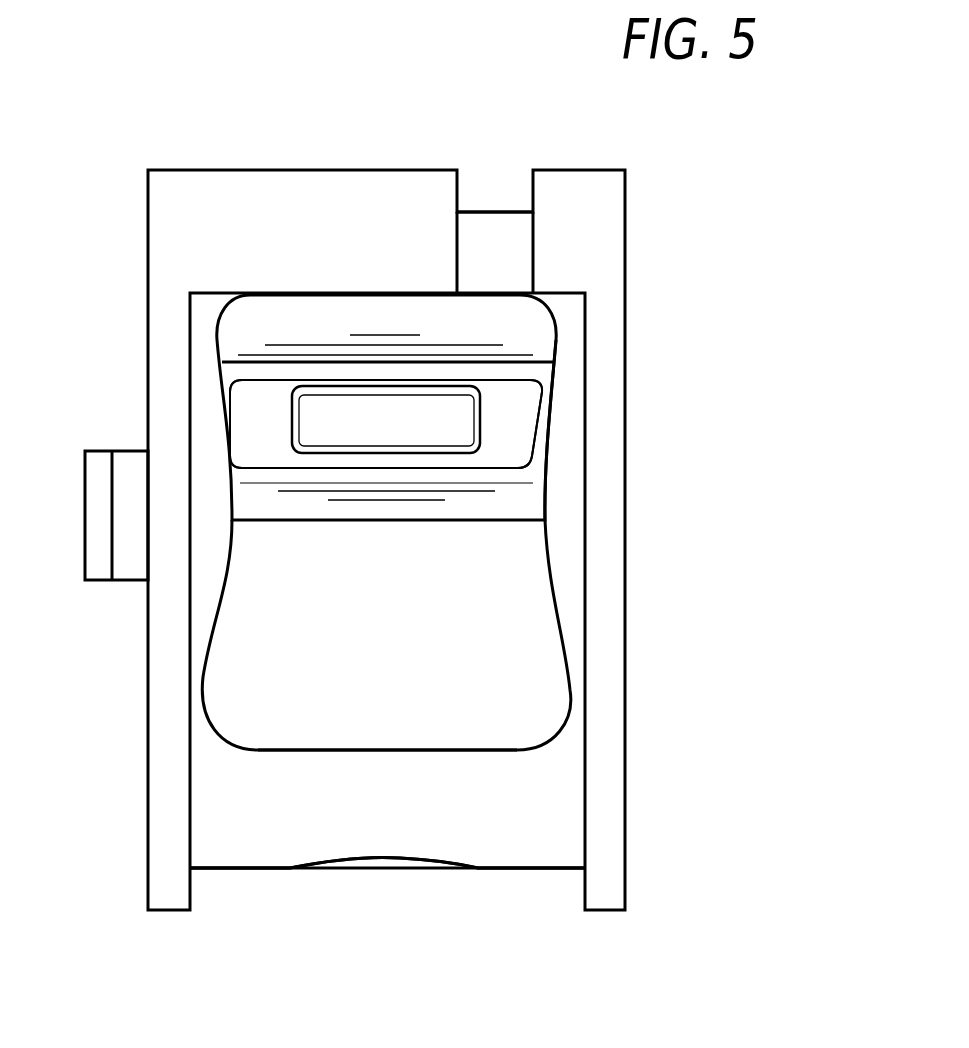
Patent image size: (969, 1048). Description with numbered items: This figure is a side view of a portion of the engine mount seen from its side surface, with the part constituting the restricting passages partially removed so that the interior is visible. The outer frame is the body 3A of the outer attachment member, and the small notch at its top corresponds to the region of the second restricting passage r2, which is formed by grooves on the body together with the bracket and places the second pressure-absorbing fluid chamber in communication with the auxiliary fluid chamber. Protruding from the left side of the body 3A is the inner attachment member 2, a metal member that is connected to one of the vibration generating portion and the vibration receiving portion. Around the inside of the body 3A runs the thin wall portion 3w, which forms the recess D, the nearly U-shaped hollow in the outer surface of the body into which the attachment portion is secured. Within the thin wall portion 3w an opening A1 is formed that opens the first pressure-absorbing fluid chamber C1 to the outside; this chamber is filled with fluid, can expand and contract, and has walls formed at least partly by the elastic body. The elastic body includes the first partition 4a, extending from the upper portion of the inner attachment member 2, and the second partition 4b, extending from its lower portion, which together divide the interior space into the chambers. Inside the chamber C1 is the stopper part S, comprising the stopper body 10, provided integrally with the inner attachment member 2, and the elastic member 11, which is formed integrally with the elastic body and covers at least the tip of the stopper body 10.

The body 3A is at (232, 163).
The second restricting passage r2 is at (490, 199).
The inner attachment member 2 is at (115, 443).
The thin wall portion 3w is at (484, 826).
The recess D is at (277, 827).
The first partition 4a is at (318, 335).
The second partition 4b is at (380, 688).
The elastic member 11 is at (270, 444).
The stopper body 10 is at (386, 424).
The stopper part S is at (346, 427).
The opening A1 is at (325, 748).
The first pressure-absorbing fluid chamber C1 is at (490, 602).